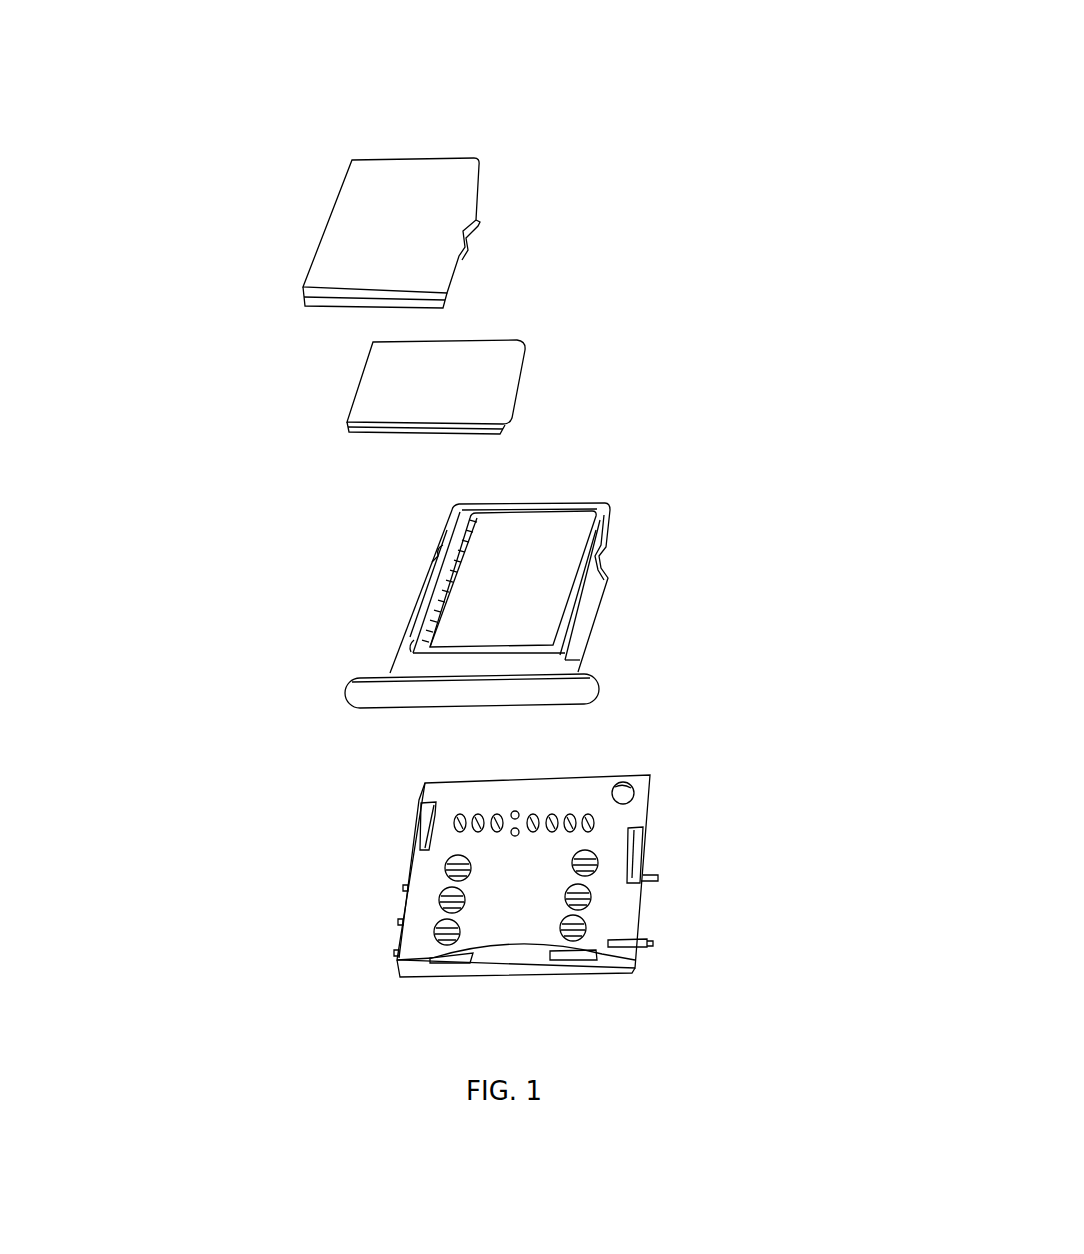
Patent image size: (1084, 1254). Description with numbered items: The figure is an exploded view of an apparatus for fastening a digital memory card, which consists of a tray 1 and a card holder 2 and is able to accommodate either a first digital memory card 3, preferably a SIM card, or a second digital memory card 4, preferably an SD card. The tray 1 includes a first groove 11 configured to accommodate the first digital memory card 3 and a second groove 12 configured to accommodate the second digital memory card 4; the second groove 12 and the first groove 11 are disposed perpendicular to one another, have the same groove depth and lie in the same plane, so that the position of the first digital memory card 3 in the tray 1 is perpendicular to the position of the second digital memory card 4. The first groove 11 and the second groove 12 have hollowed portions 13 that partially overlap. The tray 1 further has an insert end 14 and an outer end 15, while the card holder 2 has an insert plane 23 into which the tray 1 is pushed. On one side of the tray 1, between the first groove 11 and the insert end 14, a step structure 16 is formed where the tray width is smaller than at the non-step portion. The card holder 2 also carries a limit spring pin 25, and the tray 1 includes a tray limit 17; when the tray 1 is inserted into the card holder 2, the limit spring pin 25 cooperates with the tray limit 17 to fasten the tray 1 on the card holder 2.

The tray 1 is at (505, 542).
The card holder 2 is at (547, 862).
The first digital memory card 3 is at (507, 352).
The second digital memory card 4 is at (430, 183).
The first groove 11 is at (578, 595).
The second groove 12 is at (470, 527).
The hollowed portions 13 is at (538, 550).
The insert end 14 is at (538, 502).
The outer end 15 is at (385, 693).
The step structure 16 is at (600, 537).
The tray limit 17 is at (450, 525).
The insert plane 23 is at (505, 968).
The limit spring pin 25 is at (430, 822).